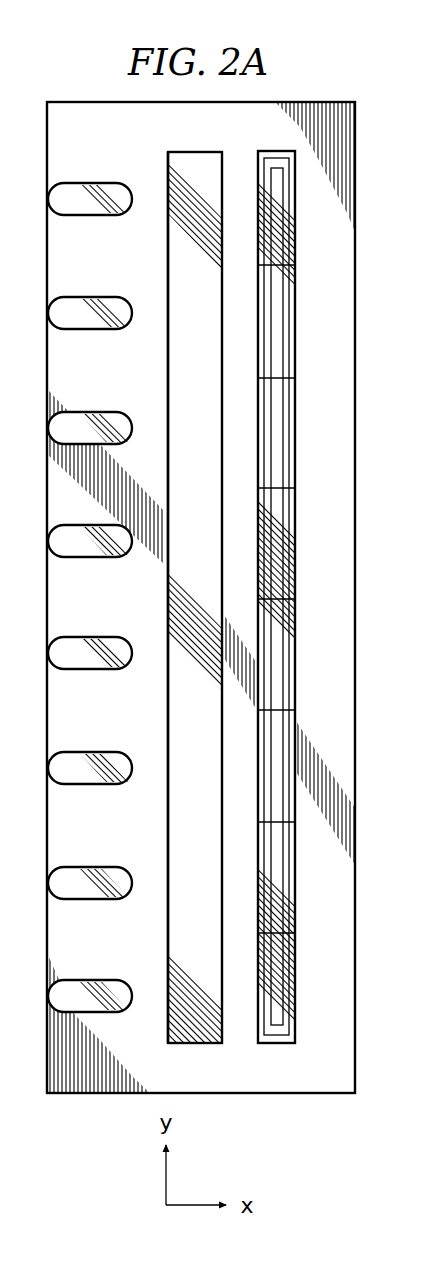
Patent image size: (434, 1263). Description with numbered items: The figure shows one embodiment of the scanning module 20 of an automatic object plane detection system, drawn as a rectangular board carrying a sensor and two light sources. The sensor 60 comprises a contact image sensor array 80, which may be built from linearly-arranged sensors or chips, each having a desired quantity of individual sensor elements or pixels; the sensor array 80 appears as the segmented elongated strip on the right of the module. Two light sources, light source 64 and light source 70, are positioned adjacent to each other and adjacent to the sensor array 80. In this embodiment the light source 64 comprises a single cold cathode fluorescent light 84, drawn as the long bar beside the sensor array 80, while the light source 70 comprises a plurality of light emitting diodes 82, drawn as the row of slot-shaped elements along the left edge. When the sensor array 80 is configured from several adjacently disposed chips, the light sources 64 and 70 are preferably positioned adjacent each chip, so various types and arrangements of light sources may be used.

The scanning module 20 is at (314, 82).
The light source 70 is at (106, 559).
The light emitting diodes 82 is at (90, 183).
The cold cathode fluorescent light 84 is at (168, 268).
The light source 64 is at (187, 620).
The sensor 60 is at (303, 619).
The contact image sensor array 80 is at (295, 343).